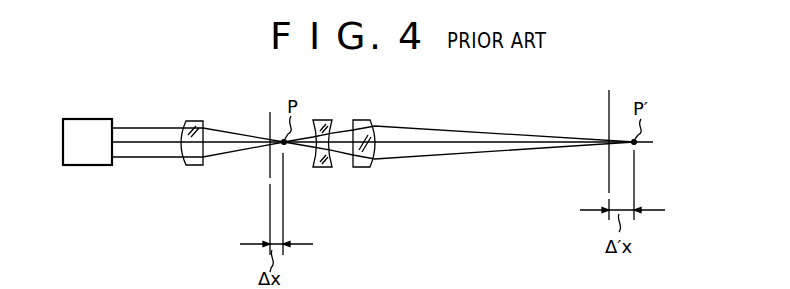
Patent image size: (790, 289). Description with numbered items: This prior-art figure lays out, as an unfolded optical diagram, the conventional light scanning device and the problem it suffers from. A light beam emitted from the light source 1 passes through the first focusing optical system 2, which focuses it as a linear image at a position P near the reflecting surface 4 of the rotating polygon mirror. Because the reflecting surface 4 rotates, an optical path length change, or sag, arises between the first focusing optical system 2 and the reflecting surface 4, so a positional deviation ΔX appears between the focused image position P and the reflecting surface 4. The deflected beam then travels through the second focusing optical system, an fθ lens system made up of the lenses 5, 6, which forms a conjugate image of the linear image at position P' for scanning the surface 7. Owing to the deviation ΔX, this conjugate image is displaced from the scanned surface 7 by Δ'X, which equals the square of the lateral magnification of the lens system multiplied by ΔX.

The light source 1 is at (87, 163).
The first focusing optical system 2 is at (193, 166).
The reflecting surface 4 is at (268, 158).
The lens 5 is at (318, 168).
The lens 6 is at (365, 168).
The surface 7 is at (607, 112).